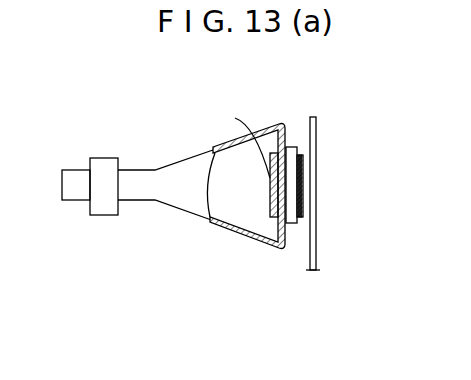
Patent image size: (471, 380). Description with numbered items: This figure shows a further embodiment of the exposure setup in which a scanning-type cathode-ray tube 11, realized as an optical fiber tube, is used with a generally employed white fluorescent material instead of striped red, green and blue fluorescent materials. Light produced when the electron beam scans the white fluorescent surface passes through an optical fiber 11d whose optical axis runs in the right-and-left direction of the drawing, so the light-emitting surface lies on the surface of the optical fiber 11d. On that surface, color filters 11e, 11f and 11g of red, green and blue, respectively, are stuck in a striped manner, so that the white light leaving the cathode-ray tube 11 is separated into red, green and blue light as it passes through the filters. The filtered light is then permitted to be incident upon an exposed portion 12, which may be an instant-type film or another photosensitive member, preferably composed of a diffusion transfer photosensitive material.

The cathode-ray tube 11 is at (186, 211).
The optical fiber 11d is at (293, 147).
The red color filter 11e is at (303, 158).
The green color filter 11f is at (303, 180).
The blue color filter 11g is at (303, 205).
The exposed portion 12 is at (316, 260).